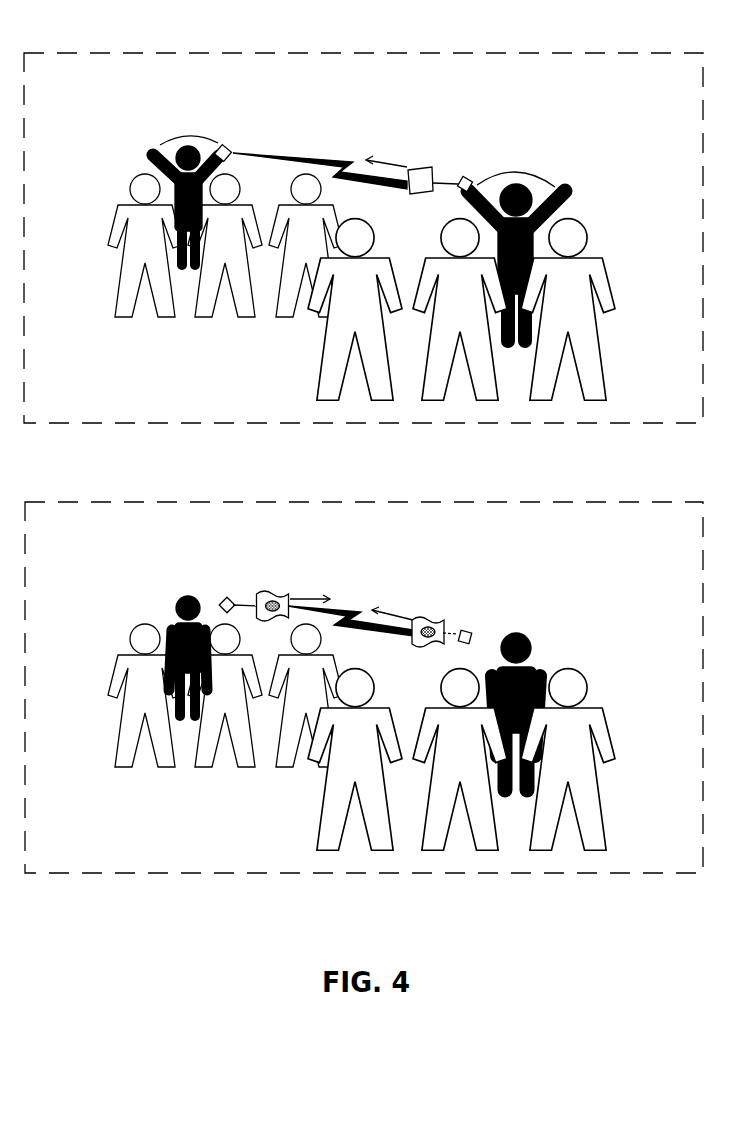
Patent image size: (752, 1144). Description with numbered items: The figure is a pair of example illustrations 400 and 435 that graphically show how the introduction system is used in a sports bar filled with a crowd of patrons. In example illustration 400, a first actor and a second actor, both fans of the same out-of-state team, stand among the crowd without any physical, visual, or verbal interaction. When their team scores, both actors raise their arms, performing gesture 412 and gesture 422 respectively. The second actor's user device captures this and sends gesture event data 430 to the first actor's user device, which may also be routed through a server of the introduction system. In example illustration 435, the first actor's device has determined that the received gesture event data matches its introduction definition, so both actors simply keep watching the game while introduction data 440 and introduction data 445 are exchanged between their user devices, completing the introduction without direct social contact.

The example illustration 400 is at (153, 36).
The gesture 412 is at (189, 132).
The gesture 422 is at (516, 168).
The gesture event data 430 is at (345, 172).
The example illustration 435 is at (165, 486).
The introduction data 440 is at (323, 603).
The introduction data 445 is at (415, 621).